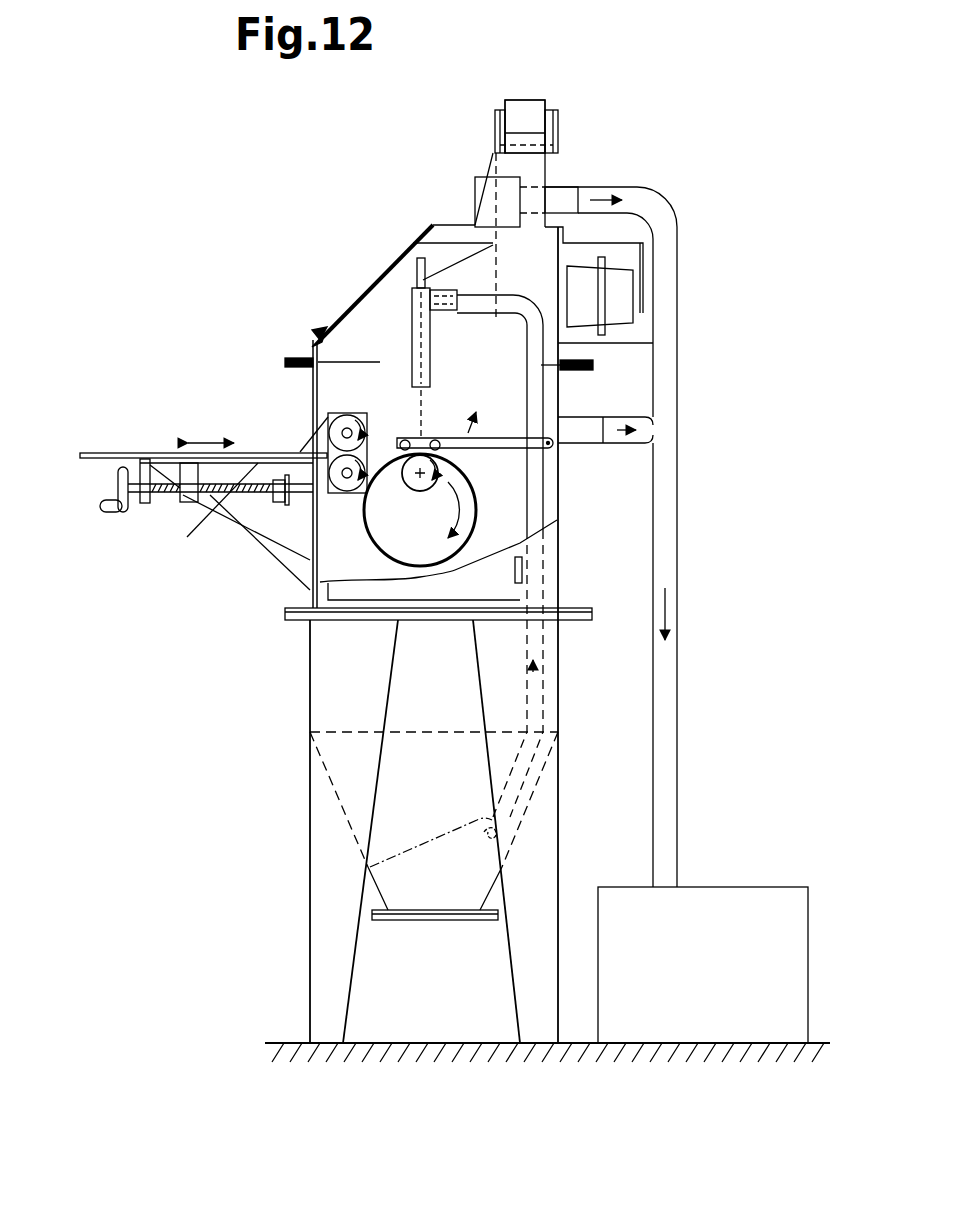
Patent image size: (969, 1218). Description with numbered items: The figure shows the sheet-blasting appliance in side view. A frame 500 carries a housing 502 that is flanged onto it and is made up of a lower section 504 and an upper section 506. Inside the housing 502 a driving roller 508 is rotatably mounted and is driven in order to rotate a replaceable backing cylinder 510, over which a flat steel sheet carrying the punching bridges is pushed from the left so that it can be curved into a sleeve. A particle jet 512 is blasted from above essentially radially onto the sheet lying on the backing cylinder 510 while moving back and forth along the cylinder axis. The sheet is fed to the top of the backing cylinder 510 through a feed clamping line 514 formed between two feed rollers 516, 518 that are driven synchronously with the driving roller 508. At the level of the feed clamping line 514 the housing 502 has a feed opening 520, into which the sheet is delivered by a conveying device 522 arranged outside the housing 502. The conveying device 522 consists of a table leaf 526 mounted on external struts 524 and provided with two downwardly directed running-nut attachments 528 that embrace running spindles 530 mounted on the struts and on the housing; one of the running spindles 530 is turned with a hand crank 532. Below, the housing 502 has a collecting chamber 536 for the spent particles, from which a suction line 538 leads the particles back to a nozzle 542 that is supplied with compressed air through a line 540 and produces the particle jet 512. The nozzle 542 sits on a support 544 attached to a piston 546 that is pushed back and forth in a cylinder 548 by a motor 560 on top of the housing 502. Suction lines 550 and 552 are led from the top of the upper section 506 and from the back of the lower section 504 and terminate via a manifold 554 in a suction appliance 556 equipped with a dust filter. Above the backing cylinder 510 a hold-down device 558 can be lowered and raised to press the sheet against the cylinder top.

The frame 500 is at (306, 886).
The housing 502 is at (306, 347).
The lower section 504 is at (550, 570).
The upper section 506 is at (653, 343).
The driving roller 508 is at (417, 489).
The backing cylinder 510 is at (458, 555).
The particle jet 512 is at (422, 410).
The feed clamping line 514 is at (373, 453).
The feed roller 516 is at (333, 432).
The feed roller 518 is at (343, 485).
The feed opening 520 is at (312, 392).
The conveying device 522 is at (148, 523).
The external struts 524 is at (150, 498).
The table leaf 526 is at (102, 452).
The running-nut attachments 528 is at (172, 465).
The running spindles 530 is at (262, 503).
The hand crank 532 is at (118, 490).
The collecting chamber 536 is at (393, 835).
The suction line 538 is at (537, 717).
The line 540 is at (403, 256).
The nozzle 542 is at (412, 332).
The support 544 is at (493, 167).
The piston 546 is at (557, 120).
The cylinder 548 is at (530, 110).
The motor 560 is at (525, 126).
The suction line 550 is at (563, 193).
The suction line 552 is at (573, 433).
The manifold 554 is at (672, 552).
The suction appliance 556 is at (732, 903).
The hold-down device 558 is at (487, 440).